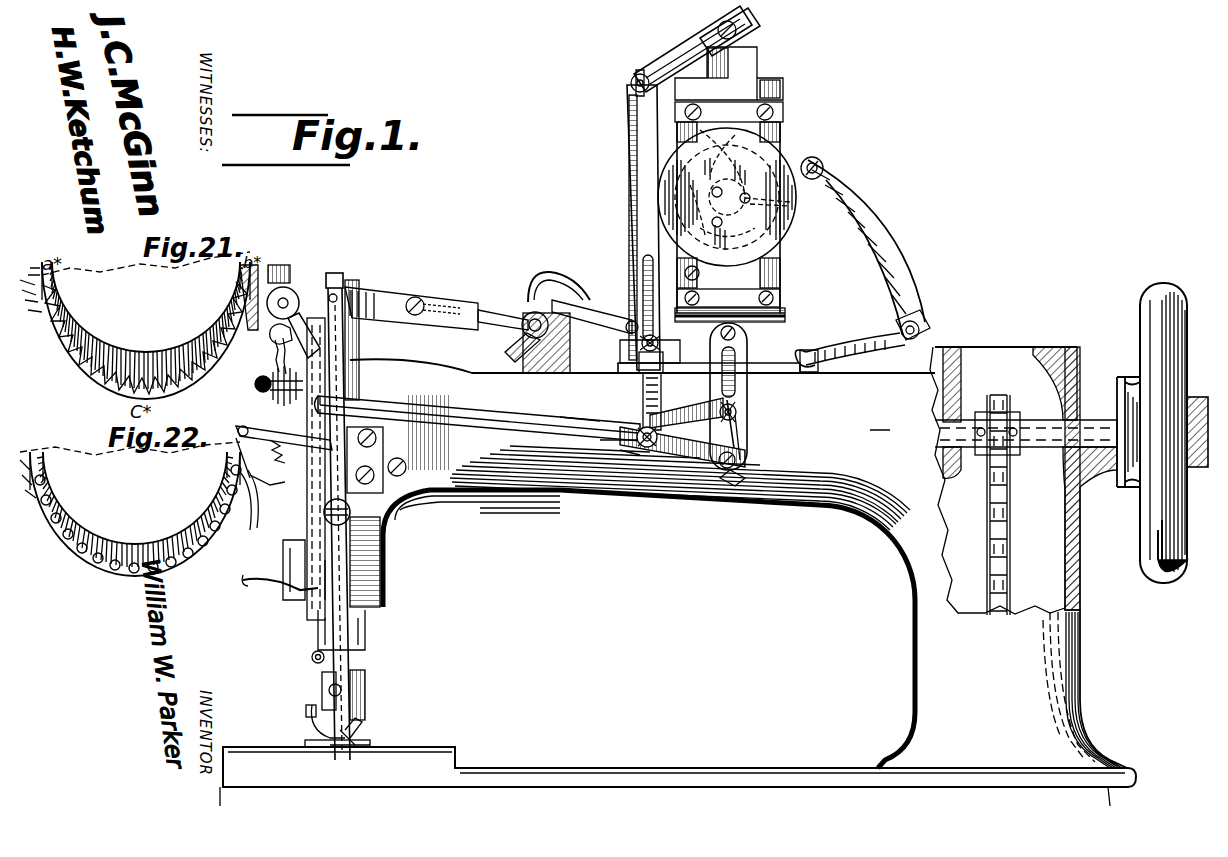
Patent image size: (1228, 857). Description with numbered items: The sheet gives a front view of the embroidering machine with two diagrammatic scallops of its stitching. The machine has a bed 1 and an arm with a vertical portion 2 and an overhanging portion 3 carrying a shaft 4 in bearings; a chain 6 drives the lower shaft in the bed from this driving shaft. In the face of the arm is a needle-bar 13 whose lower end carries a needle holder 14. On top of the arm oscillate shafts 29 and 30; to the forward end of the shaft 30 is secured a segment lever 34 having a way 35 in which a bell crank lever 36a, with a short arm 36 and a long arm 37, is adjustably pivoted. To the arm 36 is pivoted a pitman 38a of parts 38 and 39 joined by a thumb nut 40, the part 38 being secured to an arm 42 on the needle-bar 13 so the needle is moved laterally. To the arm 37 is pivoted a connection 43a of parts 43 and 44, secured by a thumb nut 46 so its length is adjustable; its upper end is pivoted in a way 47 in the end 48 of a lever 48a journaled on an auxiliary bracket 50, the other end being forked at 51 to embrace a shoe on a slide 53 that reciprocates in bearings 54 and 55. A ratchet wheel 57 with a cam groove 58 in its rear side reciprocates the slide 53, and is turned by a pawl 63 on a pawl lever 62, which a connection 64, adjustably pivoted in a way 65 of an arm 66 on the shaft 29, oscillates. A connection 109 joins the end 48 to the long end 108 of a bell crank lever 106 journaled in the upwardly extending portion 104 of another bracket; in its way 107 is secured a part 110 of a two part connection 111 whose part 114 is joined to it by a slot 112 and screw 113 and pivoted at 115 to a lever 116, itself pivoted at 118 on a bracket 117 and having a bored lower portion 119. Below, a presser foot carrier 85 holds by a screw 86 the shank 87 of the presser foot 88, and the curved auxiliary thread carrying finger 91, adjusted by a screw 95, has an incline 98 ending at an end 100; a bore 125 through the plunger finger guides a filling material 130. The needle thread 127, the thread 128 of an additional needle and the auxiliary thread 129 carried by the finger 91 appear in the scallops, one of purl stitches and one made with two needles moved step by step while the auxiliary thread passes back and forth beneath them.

The bed 1 is at (656, 775).
The vertical portion of the arm 2 is at (1028, 557).
The overhanging portion of the arm 3 is at (540, 493).
The shaft 4 is at (1038, 426).
The chain 6 is at (1012, 478).
The needle-bar 13 is at (350, 273).
The needle holder 14 is at (312, 658).
The shaft 29 is at (805, 350).
The shaft 30 is at (747, 370).
The segment lever 34 is at (745, 480).
The way 35 is at (720, 388).
The short arm 36 is at (742, 440).
The bell crank lever 36a is at (740, 405).
The long arm 37 is at (636, 430).
The part of pitman 38 is at (440, 415).
The pitman 38a is at (567, 410).
The part of pitman 39 is at (672, 450).
The thumb nut 40 is at (625, 452).
The arm 42 is at (328, 368).
The part of connection 43 is at (640, 388).
The connection 43a is at (640, 205).
The part of connection 44 is at (640, 258).
The thumb nut 46 is at (660, 348).
The way 47 is at (668, 58).
The end of lever 48 is at (630, 76).
The lever 48a is at (680, 38).
The auxiliary bracket 50 is at (717, 113).
The forked end 51 is at (708, 30).
The slide 53 is at (758, 20).
The bearing 54 is at (775, 112).
The bearing 55 is at (785, 292).
The ratchet wheel 57 is at (727, 197).
The cam groove 58 is at (775, 228).
The pawl lever 62 is at (809, 158).
The pawl 63 is at (828, 182).
The connection 64 is at (866, 247).
The way 65 is at (925, 318).
The arm 66 is at (855, 336).
The presser foot carrier 85 is at (358, 678).
The screw 86 is at (342, 690).
The shank 87 is at (322, 700).
The presser foot 88 is at (325, 750).
The auxiliary thread carrying finger 91 is at (322, 733).
The screw 95 is at (306, 712).
The incline 98 is at (356, 738).
The end 100 is at (362, 722).
The upwardly extending portion 104 is at (570, 345).
The bell crank lever 106 is at (545, 282).
The way 107 is at (512, 348).
The arm 108 is at (604, 305).
The connection 109 is at (628, 170).
The part 110 is at (496, 312).
The two part connection 111 is at (411, 298).
The slot 112 is at (448, 312).
The screw 113 is at (410, 313).
The part 114 is at (366, 300).
The pivot 115 is at (296, 296).
The lever 116 is at (336, 458).
The bracket 117 is at (395, 500).
The pivot 118 is at (324, 513).
The lower portion 119 is at (352, 644).
The bore 125 is at (352, 750).
The needle thread 127 is at (267, 433).
The thread of additional needle 128 is at (284, 438).
The auxiliary thread 129 is at (275, 345).
The filling material 130 is at (280, 265).